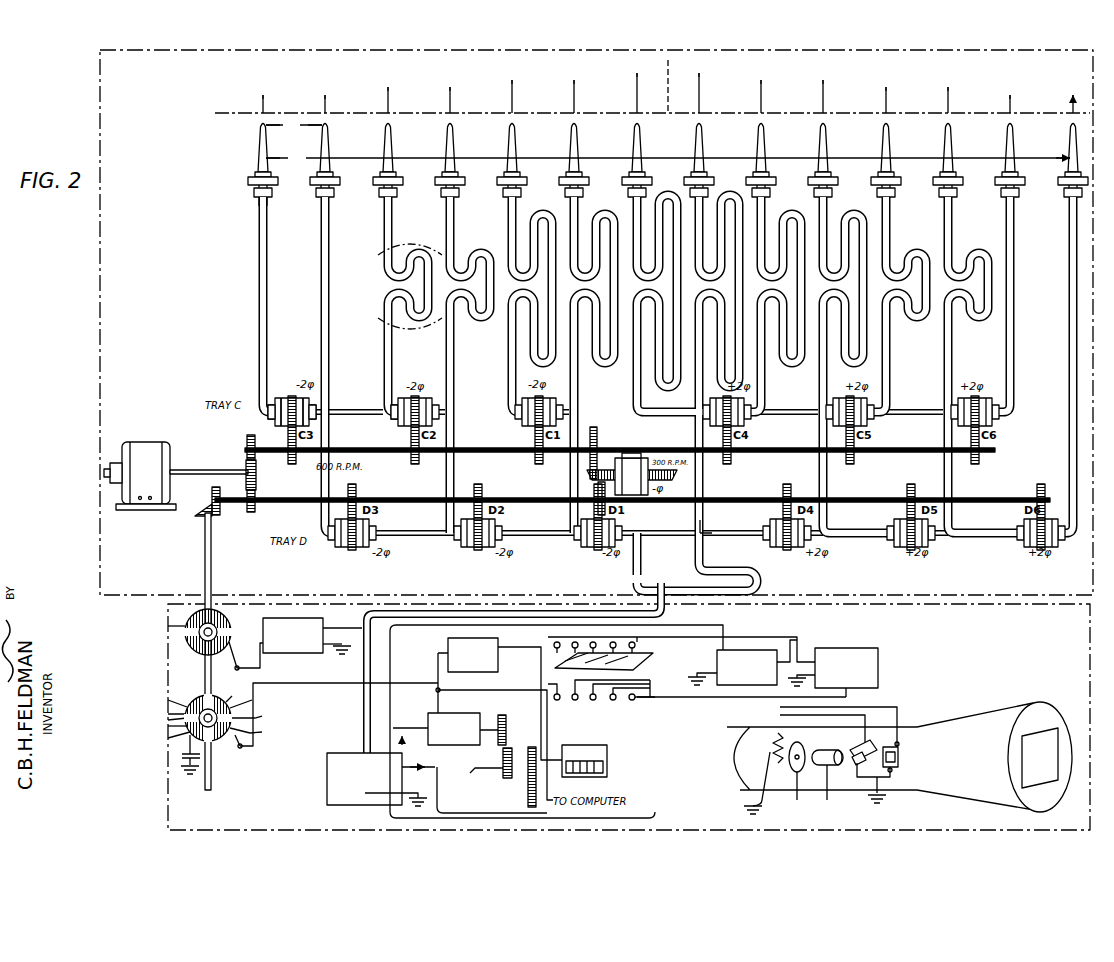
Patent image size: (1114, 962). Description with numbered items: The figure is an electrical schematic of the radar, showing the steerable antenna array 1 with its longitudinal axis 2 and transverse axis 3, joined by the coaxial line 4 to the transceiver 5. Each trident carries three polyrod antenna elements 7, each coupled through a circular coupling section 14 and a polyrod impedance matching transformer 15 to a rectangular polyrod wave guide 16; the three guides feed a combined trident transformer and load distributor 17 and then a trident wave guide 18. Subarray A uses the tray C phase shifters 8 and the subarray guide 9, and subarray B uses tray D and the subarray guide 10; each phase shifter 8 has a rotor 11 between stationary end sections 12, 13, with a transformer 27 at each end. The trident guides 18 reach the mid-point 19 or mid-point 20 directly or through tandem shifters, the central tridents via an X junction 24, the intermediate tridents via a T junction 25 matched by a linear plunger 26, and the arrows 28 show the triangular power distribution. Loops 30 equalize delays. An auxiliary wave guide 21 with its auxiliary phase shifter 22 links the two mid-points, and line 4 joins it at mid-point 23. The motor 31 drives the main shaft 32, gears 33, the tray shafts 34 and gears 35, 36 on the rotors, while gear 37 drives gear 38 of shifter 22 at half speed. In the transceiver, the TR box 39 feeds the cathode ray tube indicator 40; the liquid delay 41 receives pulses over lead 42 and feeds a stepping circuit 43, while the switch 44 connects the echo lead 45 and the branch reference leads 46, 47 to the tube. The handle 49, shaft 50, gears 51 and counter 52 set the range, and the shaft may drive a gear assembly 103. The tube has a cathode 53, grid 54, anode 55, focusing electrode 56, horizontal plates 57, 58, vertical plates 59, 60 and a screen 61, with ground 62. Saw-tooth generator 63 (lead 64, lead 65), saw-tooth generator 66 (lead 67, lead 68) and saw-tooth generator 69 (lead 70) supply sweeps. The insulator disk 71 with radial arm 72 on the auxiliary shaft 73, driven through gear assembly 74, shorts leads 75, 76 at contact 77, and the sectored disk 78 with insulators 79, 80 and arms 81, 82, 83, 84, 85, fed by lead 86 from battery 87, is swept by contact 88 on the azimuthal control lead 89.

The multiple unit steerable antenna array 1 is at (100, 285).
The longitudinal axis 2 is at (235, 112).
The transverse axis 3 is at (650, 128).
The coaxial line 4 is at (666, 598).
The transceiver 5 is at (168, 662).
The dielectric antenna element 7 is at (670, 422).
The adjustable wave guide phase shifter 8 is at (364, 305).
The subarray rectangular wave guide channel 9 is at (262, 418).
The rectangular branch wave guide channel 10 is at (332, 545).
The rotor 11 is at (286, 398).
The end stationary section 12 is at (314, 422).
The end stationary section 13 is at (274, 424).
The circular air-filled wave guide coupling section 14 is at (252, 169).
The polyrod impedance matching transformer 15 is at (247, 181).
The rectangular polyrod wave guide 16 is at (272, 190).
The combined trident transformer and load distributor 17 is at (256, 197).
The rectangular trident wave guide 18 is at (328, 350).
The mid-point of subarray guide 19 is at (640, 416).
The mid-point of subarray guide 20 is at (700, 538).
The rectangular auxiliary wave guide 21 is at (642, 568).
The auxiliary rotatable wave guide phase shifter 22 is at (598, 492).
The mid-point of auxiliary guide 23 is at (655, 585).
The X wave guide junction 24 is at (640, 420).
The T wave guide junction 25 is at (380, 400).
The linear plunger 26 is at (384, 412).
The transformer 27 is at (270, 398).
The arrows 28 is at (388, 85).
The loop 30 is at (470, 252).
The high and low speed motor 31 is at (170, 452).
The main shaft 32 is at (212, 470).
The gear 33 is at (247, 452).
The tray shaft 34 is at (256, 476).
The gear 35 is at (294, 470).
The gear 36 is at (287, 455).
The gear 37 is at (594, 425).
The gear 38 is at (588, 460).
The TR box 39 is at (327, 776).
The cathode ray tube indicator 40 is at (984, 718).
The adjustable liquid delay 41 is at (442, 690).
The reference pulse lead 42 is at (428, 722).
The stepping circuit 43 is at (448, 660).
The double throw five-pole switch 44 is at (638, 660).
The received echo pulse lead 45 is at (455, 814).
The branch reference pulse lead 46 is at (495, 741).
The branch reference pulse lead 47 is at (522, 660).
The handle 49 is at (470, 772).
The shaft 50 is at (514, 752).
The gears 51 is at (508, 730).
The counter 52 is at (608, 760).
The cathode 53 is at (766, 787).
The grid 54 is at (778, 743).
The anode 55 is at (805, 750).
The focusing electrode 56 is at (832, 750).
The horizontal plate 57 is at (866, 740).
The horizontal plate 58 is at (852, 762).
The vertical plate 59 is at (900, 748).
The vertical plate 60 is at (898, 762).
The rectangular screen 61 is at (1056, 732).
The ground 62 is at (330, 656).
The saw-tooth generator 63 is at (878, 664).
The lead 64 is at (848, 694).
The lead 65 is at (802, 642).
The saw-tooth generator 66 is at (756, 650).
The lead 67 is at (390, 734).
The lead 68 is at (680, 697).
The saw-tooth generator 69 is at (328, 628).
The lead 70 is at (364, 650).
The insulator disk 71 is at (190, 650).
The conductive radial arm member 72 is at (172, 628).
The auxiliary shaft 73 is at (212, 560).
The gear assembly 74 is at (210, 500).
The lead 75 is at (262, 628).
The lead 76 is at (260, 660).
The contact 77 is at (214, 702).
The sectored disk 78 is at (168, 721).
The small sectoral insulator 79 is at (186, 706).
The large sectoral insulator 80 is at (170, 735).
The radial conductive arm 81 is at (238, 748).
The radial conductive arm 82 is at (268, 713).
The radial conductive arm 83 is at (236, 692).
The radial conductive arm 84 is at (194, 702).
The radial conductive arm 85 is at (178, 714).
The lead 86 is at (182, 750).
The battery 87 is at (182, 776).
The contact 88 is at (265, 731).
The azimuthal indication control lead 89 is at (290, 684).
The gear assembly 103 is at (528, 772).